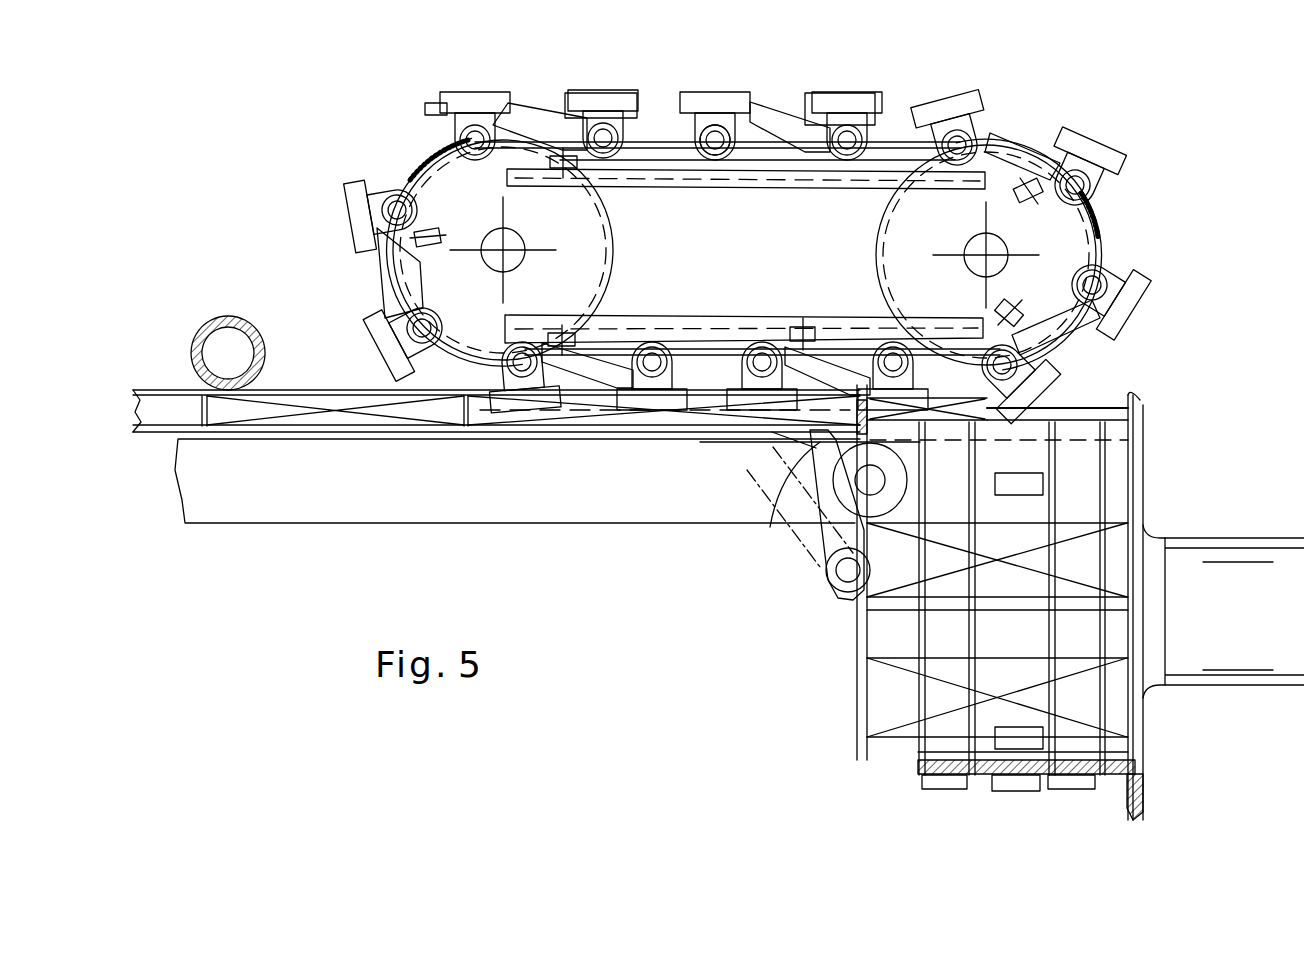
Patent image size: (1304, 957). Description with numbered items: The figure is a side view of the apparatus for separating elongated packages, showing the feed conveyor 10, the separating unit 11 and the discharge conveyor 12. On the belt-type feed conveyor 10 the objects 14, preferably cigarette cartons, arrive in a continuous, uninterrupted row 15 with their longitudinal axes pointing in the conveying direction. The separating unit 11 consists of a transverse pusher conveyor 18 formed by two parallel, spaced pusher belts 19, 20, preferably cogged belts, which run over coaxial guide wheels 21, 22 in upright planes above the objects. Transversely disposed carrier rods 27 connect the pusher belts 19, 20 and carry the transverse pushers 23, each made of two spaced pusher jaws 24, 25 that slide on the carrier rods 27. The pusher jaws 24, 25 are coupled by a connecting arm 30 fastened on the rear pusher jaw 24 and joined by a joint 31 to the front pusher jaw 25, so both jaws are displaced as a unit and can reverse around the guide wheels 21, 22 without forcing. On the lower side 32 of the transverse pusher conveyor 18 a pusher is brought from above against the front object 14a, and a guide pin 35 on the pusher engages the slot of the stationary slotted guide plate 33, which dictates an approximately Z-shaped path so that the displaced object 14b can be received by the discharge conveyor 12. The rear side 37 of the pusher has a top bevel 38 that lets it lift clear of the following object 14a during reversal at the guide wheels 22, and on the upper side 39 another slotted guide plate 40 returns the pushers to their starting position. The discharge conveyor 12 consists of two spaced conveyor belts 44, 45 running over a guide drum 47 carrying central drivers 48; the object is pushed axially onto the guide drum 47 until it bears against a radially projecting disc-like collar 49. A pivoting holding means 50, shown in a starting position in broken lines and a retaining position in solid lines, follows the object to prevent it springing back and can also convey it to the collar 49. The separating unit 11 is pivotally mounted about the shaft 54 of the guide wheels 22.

The feed conveyor 10 is at (296, 355).
The separating unit 11 is at (1052, 108).
The discharge conveyor 12 is at (830, 704).
The objects 14 is at (290, 412).
The front object 14a is at (587, 425).
The transversely displaced object 14b is at (745, 420).
The row 15 is at (171, 375).
The transverse pusher conveyor 18 is at (654, 100).
The pusher belt 19 is at (897, 125).
The pusher belt 20 is at (953, 132).
The guide wheels 21 is at (600, 255).
The guide wheels 22 is at (1073, 241).
The transverse pusher 23 is at (769, 82).
The pusher jaw 24 is at (582, 100).
The pusher jaw 25 is at (460, 97).
The carrier rods 27 is at (714, 145).
The connecting arm 30 is at (530, 112).
The joint 31 is at (467, 118).
The lower side 32 is at (700, 360).
The slotted guide plate 33 is at (640, 320).
The guide pin 35 is at (560, 162).
The rear side 37 is at (365, 178).
The top bevel 38 is at (385, 180).
The upper side 39 is at (648, 137).
The slotted guide plate 40 is at (772, 175).
The conveyor belt 44 is at (930, 628).
The conveyor belt 45 is at (1085, 510).
The guide drum 47 is at (1115, 480).
The drivers 48 is at (1015, 612).
The collar 49 is at (1132, 400).
The holding means 50 is at (810, 432).
The shaft 54 is at (998, 253).